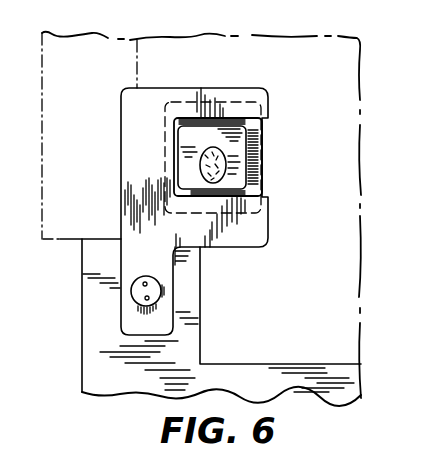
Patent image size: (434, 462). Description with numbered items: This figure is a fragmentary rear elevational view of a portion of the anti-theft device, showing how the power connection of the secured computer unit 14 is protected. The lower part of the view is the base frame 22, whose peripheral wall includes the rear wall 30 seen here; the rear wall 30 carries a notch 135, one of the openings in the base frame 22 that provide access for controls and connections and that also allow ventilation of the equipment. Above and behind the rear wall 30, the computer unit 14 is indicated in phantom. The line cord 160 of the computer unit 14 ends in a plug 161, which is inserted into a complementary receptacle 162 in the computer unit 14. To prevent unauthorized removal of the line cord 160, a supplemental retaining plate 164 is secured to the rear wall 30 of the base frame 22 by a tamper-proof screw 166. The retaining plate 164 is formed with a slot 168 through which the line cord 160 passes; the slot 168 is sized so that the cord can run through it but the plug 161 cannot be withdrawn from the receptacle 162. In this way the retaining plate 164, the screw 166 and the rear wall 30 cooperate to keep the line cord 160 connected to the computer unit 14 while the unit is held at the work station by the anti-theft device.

The computer unit 14 is at (68, 58).
The base frame 22 is at (104, 302).
The rear wall 30 is at (190, 349).
The notch 135 is at (336, 346).
The line cord 160 is at (228, 165).
The plug 161 is at (268, 118).
The receptacle 162 is at (260, 153).
The supplemental retaining plate 164 is at (262, 227).
The tamper-proof screw 166 is at (157, 282).
The slot 168 is at (203, 117).